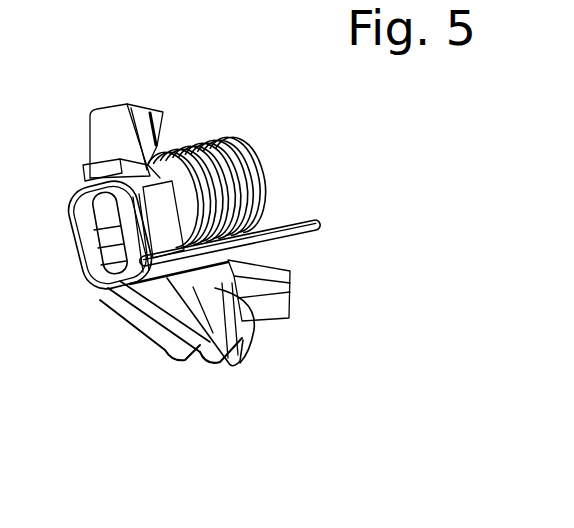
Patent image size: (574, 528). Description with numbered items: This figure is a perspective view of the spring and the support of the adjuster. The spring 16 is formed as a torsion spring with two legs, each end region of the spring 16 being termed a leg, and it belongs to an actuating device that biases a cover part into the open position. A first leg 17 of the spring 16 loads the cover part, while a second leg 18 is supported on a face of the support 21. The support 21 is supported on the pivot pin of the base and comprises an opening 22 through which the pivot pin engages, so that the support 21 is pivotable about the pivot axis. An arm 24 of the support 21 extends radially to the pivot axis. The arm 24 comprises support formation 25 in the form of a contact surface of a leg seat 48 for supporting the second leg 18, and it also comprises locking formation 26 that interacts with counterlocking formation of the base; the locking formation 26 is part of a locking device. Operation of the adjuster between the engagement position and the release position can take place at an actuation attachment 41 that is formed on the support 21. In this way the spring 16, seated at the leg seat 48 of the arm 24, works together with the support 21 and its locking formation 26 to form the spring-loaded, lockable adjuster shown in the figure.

The spring 16 is at (239, 130).
The first leg 17 is at (312, 212).
The second leg 18 is at (245, 358).
The support 21 is at (86, 146).
The opening 22 is at (86, 283).
The arm 24 is at (128, 318).
The support formation 25 is at (150, 321).
The locking formation 26 is at (303, 298).
The actuation attachment 41 is at (117, 100).
The leg seat 48 is at (192, 362).